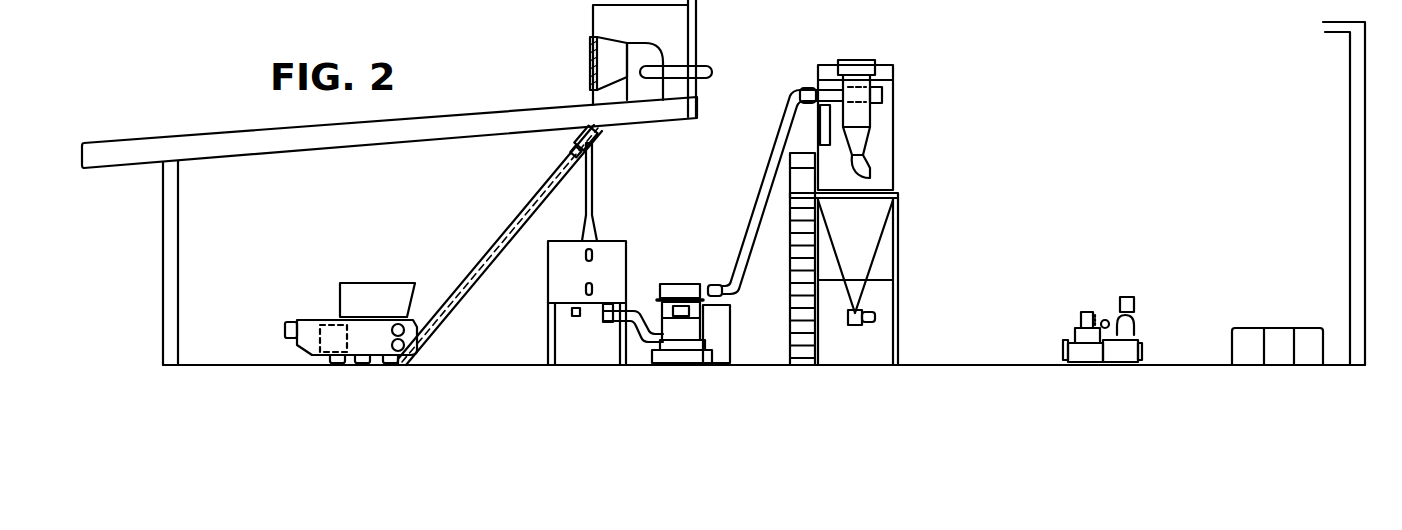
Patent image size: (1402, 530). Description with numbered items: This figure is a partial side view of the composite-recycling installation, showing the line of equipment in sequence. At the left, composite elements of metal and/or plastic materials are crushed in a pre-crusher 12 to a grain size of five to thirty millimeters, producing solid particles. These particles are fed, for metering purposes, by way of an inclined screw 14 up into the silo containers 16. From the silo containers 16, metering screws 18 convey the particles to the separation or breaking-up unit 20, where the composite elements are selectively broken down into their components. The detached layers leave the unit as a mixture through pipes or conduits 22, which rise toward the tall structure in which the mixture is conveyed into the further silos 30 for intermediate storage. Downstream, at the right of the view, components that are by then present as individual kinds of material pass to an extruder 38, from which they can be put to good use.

The pre-crusher 12 is at (382, 298).
The screw 14 is at (508, 227).
The silo containers 16 is at (608, 252).
The metering screws 18 is at (638, 318).
The separation or breaking-up unit 20 is at (695, 330).
The pipes or conduits 22 is at (778, 123).
The silos 30 is at (885, 117).
The extruder 38 is at (1142, 340).